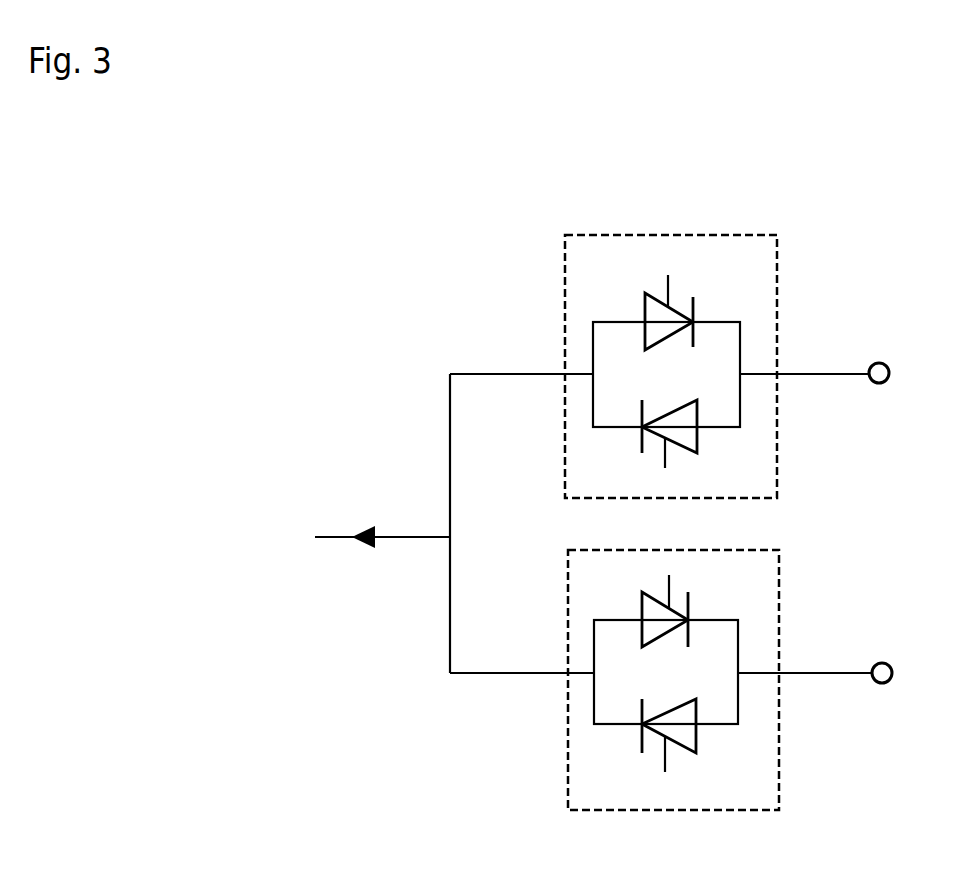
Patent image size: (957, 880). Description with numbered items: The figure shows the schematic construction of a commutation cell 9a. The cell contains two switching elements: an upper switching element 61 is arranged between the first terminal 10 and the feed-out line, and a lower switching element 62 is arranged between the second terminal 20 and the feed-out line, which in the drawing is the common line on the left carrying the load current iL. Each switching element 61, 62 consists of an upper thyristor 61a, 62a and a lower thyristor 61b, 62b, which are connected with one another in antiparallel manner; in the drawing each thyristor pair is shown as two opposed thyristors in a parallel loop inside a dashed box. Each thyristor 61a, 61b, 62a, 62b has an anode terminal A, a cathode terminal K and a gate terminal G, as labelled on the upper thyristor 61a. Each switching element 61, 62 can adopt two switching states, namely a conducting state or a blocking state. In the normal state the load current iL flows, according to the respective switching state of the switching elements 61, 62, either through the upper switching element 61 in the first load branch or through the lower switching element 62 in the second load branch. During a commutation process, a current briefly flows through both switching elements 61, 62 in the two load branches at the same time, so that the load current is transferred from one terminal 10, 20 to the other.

The commutation cell 9a is at (370, 236).
The upper switching element 61 is at (561, 300).
The upper thyristor 61a is at (678, 300).
The lower thyristor 61b is at (658, 443).
The lower switching element 62 is at (568, 767).
The upper thyristor 62a is at (692, 583).
The lower thyristor 62b is at (660, 758).
The first terminal 10 is at (887, 363).
The second terminal 20 is at (892, 680).